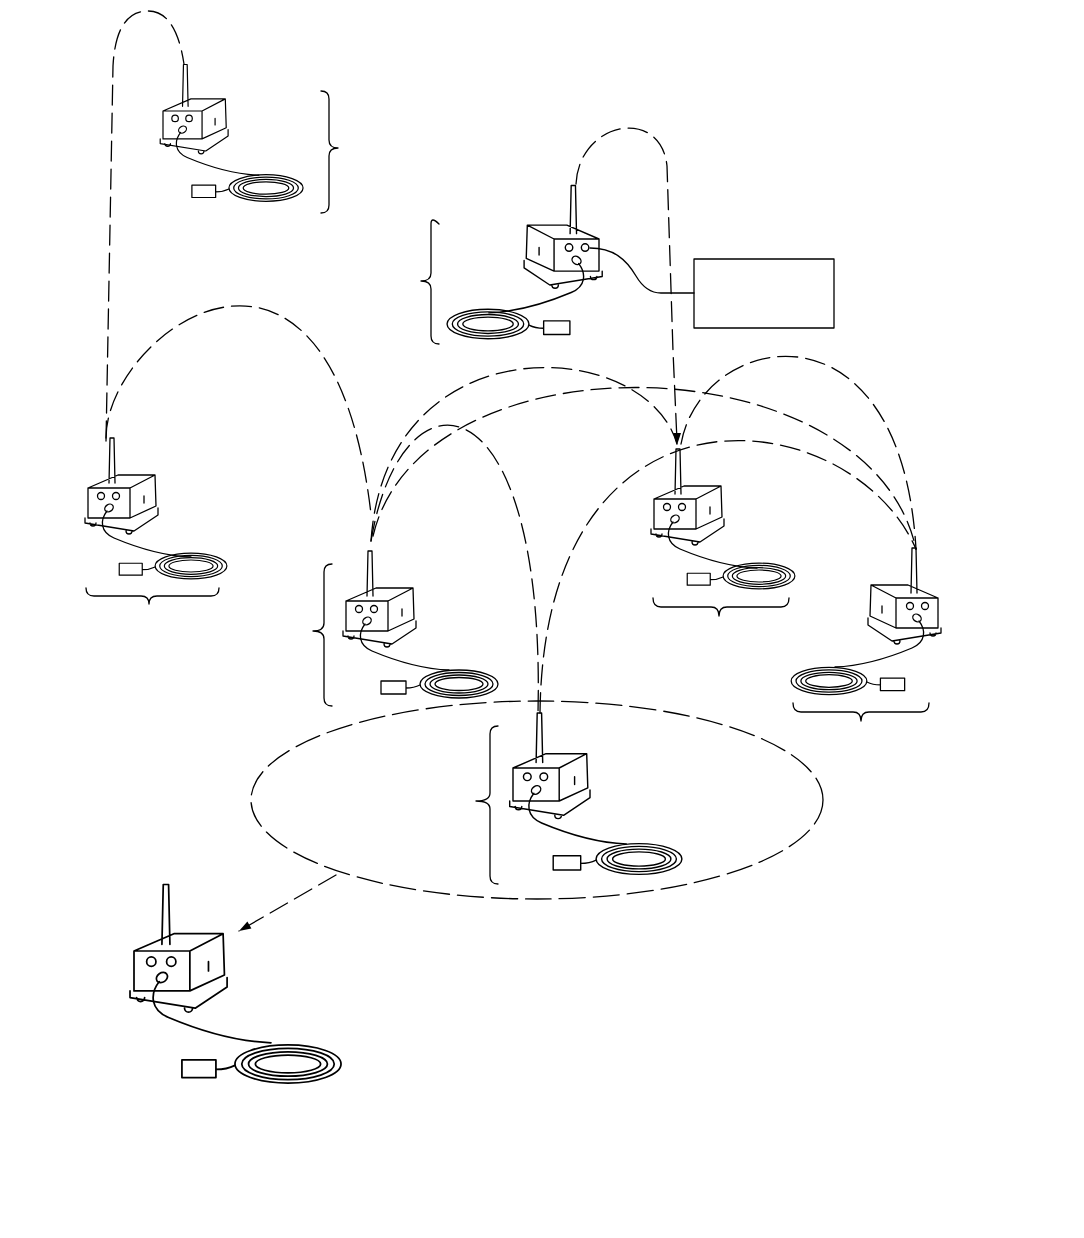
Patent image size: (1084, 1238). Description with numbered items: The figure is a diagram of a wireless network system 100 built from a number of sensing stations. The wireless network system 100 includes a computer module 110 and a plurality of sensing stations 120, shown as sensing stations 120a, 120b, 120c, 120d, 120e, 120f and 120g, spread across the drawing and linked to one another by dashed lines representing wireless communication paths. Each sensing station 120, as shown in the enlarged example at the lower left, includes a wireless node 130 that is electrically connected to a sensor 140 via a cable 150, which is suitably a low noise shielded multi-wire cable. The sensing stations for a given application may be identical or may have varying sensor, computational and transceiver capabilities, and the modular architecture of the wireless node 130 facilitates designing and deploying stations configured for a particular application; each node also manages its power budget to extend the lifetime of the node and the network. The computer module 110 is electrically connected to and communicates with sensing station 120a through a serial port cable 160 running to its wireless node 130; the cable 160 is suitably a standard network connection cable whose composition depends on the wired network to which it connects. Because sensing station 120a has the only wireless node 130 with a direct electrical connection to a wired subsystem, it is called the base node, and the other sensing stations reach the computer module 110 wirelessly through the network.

The wireless network system 100 is at (797, 70).
The computer module 110 is at (783, 306).
The sensing station 120 is at (247, 958).
The sensing station 120a is at (474, 282).
The sensing station 120b is at (723, 548).
The sensing station 120c is at (866, 649).
The sensing station 120d is at (550, 798).
The sensing station 120e is at (377, 628).
The sensing station 120f is at (156, 538).
The sensing station 120g is at (278, 139).
The wireless node 130 is at (132, 970).
The sensor 140 is at (195, 1074).
The cable 150 is at (340, 1066).
The serial port cable 160 is at (629, 252).